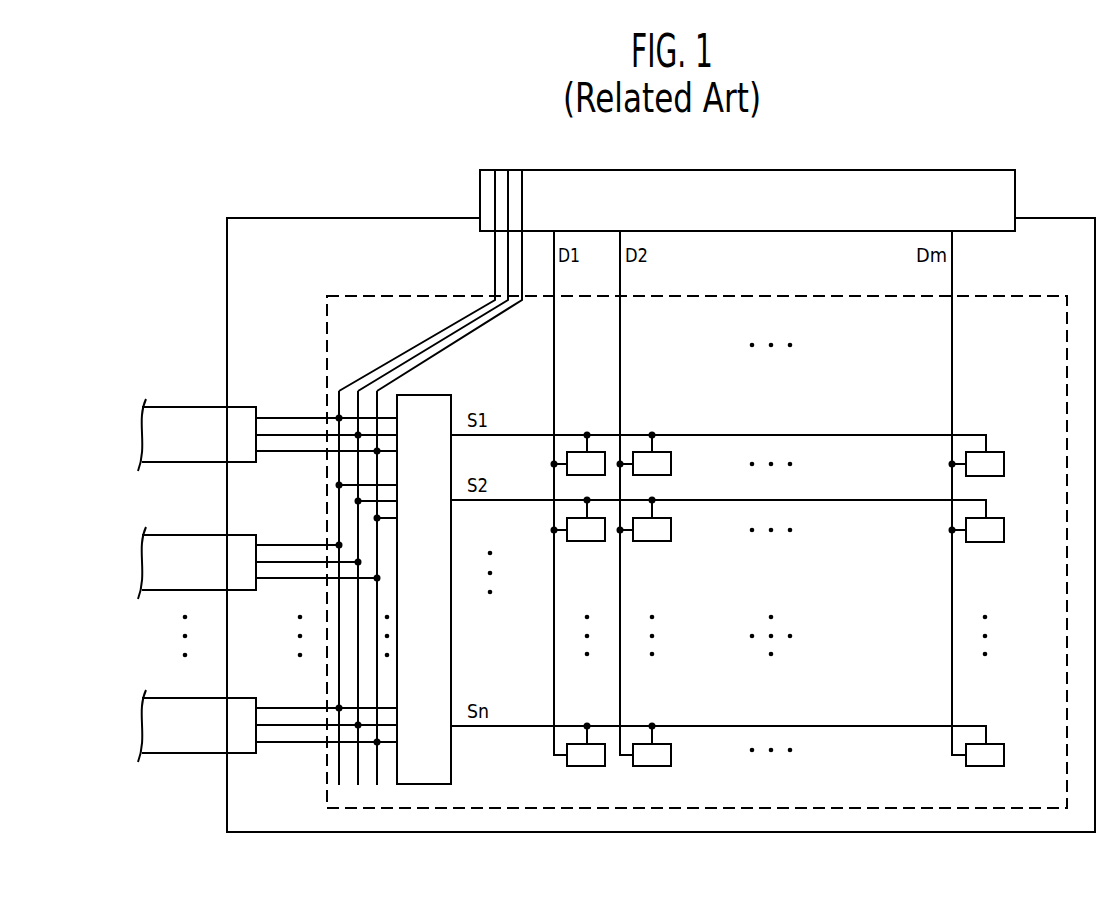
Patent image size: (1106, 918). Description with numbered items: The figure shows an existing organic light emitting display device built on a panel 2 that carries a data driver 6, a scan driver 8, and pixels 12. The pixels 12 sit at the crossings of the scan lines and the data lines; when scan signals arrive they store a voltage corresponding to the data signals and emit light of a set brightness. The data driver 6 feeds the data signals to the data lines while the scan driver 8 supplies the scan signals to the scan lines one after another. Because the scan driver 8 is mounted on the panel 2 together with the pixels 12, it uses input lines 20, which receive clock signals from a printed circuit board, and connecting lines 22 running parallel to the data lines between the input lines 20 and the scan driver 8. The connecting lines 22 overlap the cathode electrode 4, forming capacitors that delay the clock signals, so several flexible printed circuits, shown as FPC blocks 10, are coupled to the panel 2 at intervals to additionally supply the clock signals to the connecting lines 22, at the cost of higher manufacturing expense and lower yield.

The panel 2 is at (1058, 218).
The cathode electrode 4 is at (790, 296).
The data driver 6 is at (850, 169).
The scan driver 8 is at (425, 785).
The flexible printed circuit (FPC) 10 is at (180, 406).
The pixels 12 is at (997, 452).
The input lines 20 is at (522, 170).
The connecting lines 22 is at (377, 780).